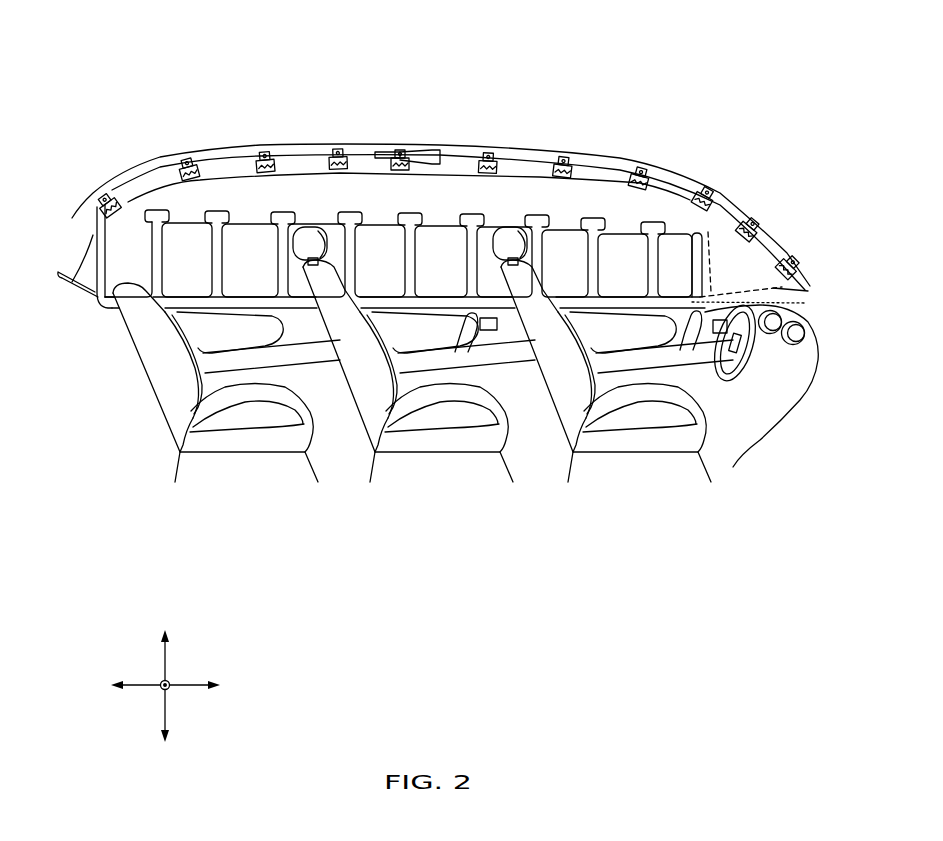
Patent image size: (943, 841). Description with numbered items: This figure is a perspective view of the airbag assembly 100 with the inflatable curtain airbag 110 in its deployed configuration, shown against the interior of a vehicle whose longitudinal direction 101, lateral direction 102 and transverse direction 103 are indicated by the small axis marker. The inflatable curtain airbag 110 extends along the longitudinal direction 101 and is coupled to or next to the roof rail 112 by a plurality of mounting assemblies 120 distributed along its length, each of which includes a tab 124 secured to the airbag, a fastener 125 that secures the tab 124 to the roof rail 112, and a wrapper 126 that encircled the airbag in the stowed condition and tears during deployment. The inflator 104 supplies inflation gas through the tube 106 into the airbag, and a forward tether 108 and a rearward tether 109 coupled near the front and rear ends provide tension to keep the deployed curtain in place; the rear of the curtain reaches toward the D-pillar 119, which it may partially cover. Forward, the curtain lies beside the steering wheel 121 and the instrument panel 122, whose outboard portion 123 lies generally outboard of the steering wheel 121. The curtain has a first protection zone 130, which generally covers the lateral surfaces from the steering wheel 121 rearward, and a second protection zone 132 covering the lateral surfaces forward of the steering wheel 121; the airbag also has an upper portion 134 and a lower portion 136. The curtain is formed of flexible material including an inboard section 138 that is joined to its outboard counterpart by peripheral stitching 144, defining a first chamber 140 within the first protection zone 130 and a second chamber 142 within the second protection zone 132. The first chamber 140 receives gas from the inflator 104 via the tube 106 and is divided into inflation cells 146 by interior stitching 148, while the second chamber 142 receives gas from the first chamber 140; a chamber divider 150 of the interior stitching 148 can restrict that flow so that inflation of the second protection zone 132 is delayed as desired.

The airbag assembly 100 is at (594, 64).
The longitudinal direction 101 is at (198, 682).
The lateral direction 102 is at (170, 690).
The transverse direction 103 is at (167, 648).
The inflator 104 is at (392, 150).
The tube 106 is at (440, 150).
The forward tether 108 is at (813, 293).
The rearward tether 109 is at (85, 290).
The inflatable curtain airbag 110 is at (333, 102).
The roof rail 112 is at (225, 156).
The D-pillar 119 is at (85, 220).
The mounting assemblies 120 is at (265, 189).
The steering wheel 121 is at (742, 381).
The instrument panel 122 is at (821, 285).
The outboard portion 123 is at (765, 232).
The tab 124 is at (508, 150).
The fastener 125 is at (487, 150).
The wrapper 126 is at (527, 148).
The first protection zone 130 is at (614, 145).
The second protection zone 132 is at (778, 240).
The upper portion 134 is at (167, 200).
The lower portion 136 is at (183, 279).
The inboard section 138 is at (493, 213).
The first chamber 140 is at (606, 212).
The second chamber 142 is at (715, 265).
The peripheral stitching 144 is at (250, 303).
The inflation cells 146 is at (360, 261).
The interior stitching 148 is at (416, 278).
The chamber divider 150 is at (692, 255).